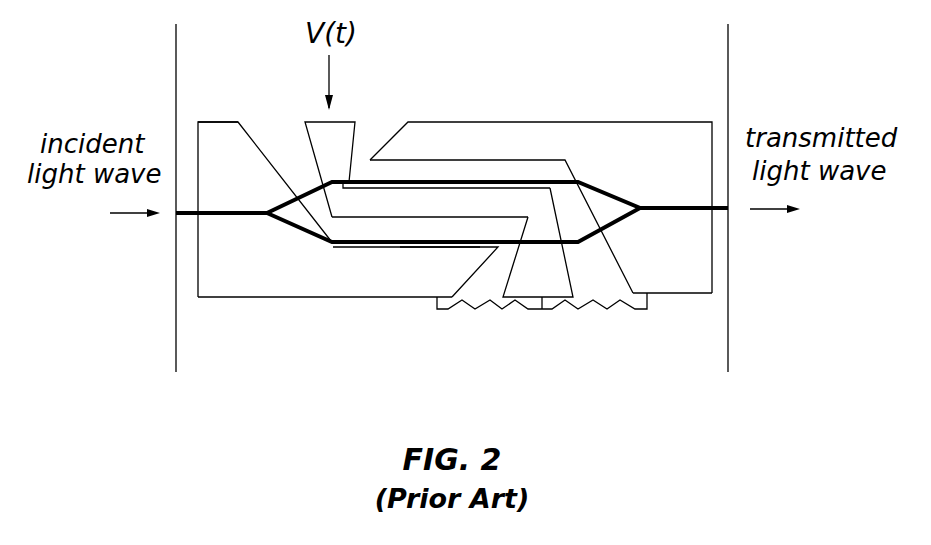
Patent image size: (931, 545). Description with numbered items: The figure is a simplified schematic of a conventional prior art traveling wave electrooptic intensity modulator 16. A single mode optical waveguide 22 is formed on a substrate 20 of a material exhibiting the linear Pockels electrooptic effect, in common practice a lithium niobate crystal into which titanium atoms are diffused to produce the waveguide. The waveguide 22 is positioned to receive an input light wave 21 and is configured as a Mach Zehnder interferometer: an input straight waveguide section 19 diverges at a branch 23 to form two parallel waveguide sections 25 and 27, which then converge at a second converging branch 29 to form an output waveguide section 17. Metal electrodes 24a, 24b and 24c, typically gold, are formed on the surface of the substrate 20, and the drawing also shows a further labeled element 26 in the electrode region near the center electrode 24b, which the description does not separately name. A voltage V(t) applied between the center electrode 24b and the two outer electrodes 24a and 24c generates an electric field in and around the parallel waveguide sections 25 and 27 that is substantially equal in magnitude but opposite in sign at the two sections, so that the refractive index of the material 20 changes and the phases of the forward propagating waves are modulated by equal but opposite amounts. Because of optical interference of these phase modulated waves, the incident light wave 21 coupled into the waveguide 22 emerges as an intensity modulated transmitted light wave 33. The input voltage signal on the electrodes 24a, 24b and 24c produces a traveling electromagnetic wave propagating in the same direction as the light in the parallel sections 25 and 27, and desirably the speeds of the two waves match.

The traveling wave electrooptic intensity modulator 16 is at (122, 424).
The output waveguide section 17 is at (684, 144).
The input straight waveguide section 19 is at (224, 191).
The substrate 20 is at (357, 365).
The input light wave 21 is at (113, 234).
The single mode optical waveguide 22 is at (233, 237).
The branch 23 is at (297, 224).
The outer electrode 24a is at (400, 283).
The center electrode 24b is at (560, 284).
The outer electrode 24c is at (667, 187).
The parallel waveguide section 25 is at (427, 145).
The termination resistor 26 is at (542, 324).
The parallel waveguide section 27 is at (431, 292).
The second converging branch 29 is at (636, 220).
The transmitted light wave 33 is at (792, 231).